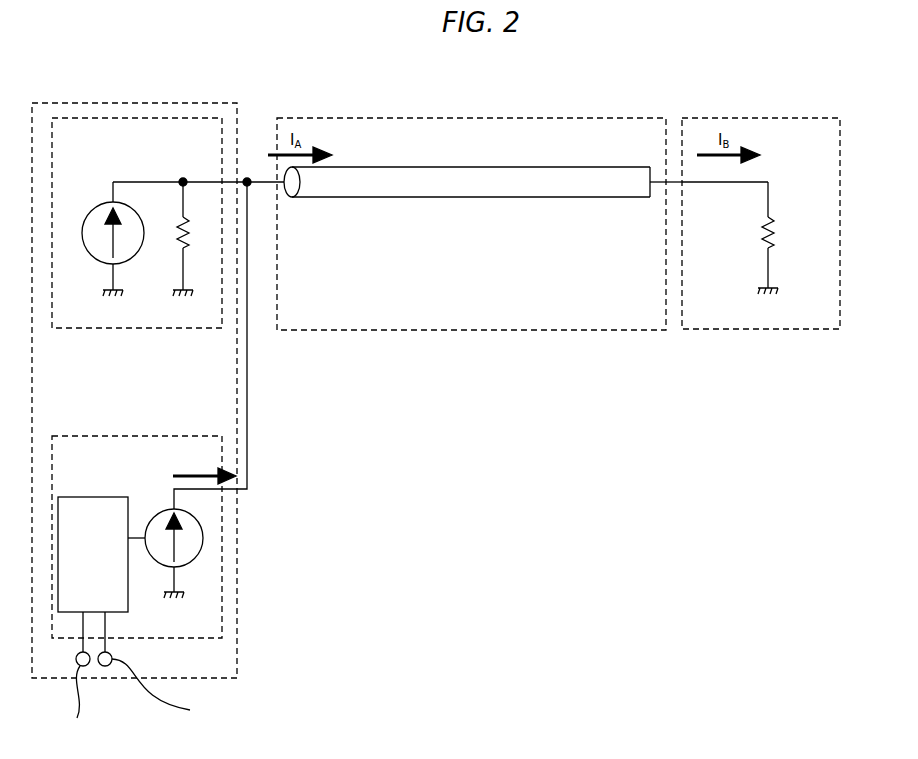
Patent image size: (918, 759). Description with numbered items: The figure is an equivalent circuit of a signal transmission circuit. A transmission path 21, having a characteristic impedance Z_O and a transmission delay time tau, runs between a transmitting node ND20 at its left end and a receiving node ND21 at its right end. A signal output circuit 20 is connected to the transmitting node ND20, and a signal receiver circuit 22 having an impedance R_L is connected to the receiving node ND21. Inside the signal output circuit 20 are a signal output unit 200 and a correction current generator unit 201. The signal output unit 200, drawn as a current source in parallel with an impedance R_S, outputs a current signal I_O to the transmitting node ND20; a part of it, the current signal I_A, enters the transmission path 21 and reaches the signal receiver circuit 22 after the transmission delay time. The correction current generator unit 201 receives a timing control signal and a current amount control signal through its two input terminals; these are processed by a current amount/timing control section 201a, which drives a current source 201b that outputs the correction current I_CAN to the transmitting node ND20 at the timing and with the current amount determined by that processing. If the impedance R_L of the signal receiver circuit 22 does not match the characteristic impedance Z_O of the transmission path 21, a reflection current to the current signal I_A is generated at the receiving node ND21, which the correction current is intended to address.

The signal output circuit 20 is at (237, 652).
The signal output unit 200 is at (152, 330).
The correction current generator unit 201 is at (271, 462).
The current amount/timing control section 201a is at (83, 497).
The current source 201b is at (155, 513).
The transmission path 21 is at (470, 330).
The signal receiver circuit 22 is at (760, 330).
The transmitting node ND20 is at (247, 178).
The receiving node ND21 is at (653, 200).